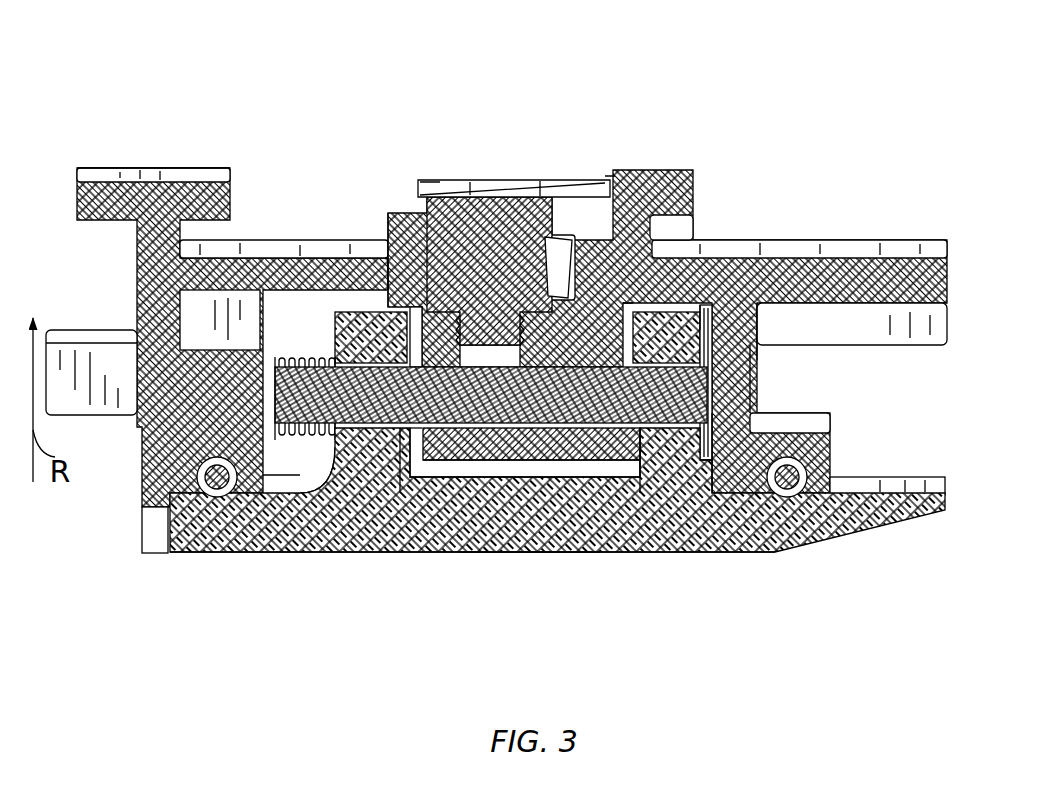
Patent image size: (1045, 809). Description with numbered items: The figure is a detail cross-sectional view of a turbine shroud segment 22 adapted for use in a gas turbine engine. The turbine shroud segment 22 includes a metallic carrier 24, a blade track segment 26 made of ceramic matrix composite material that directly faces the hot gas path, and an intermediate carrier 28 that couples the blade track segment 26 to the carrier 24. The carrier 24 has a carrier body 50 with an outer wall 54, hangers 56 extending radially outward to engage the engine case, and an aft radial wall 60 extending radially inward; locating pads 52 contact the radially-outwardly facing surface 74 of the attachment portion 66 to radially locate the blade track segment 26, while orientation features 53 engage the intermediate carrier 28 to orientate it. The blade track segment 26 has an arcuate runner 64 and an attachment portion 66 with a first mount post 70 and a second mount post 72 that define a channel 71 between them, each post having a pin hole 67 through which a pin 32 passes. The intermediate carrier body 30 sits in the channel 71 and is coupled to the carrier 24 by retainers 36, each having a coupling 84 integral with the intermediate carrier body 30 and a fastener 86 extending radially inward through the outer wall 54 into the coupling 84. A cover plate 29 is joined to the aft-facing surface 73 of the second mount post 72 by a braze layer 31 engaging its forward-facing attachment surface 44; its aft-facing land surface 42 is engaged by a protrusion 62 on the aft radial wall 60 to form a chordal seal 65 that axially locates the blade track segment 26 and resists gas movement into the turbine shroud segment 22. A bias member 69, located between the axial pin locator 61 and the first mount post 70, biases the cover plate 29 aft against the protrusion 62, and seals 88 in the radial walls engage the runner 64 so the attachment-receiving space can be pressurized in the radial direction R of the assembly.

The turbine shroud segment 22 is at (115, 100).
The carrier 24 is at (268, 185).
The blade track segment 26 is at (273, 600).
The intermediate carrier 28 is at (752, 150).
The cover plate 29 is at (755, 367).
The intermediate carrier body 30 is at (587, 302).
The braze layer 31 is at (707, 343).
The pin 32 is at (700, 333).
The retainer 36 is at (570, 103).
The aft-facing land surface 42 is at (716, 333).
The forward-facing attachment surface 44 is at (716, 318).
The carrier body 50 is at (300, 195).
The locating pad 52 is at (345, 300).
The orientation feature 53 is at (443, 272).
The outer wall 54 is at (345, 248).
The hanger 56 is at (200, 178).
The aft radial wall 60 is at (715, 355).
The axial pin locator 61 is at (200, 340).
The protrusion 62 is at (718, 383).
The runner 64 is at (330, 556).
The chordal seal 65 is at (732, 423).
The attachment portion 66 is at (535, 622).
The first pin hole 67 is at (400, 430).
The bias member 69 is at (302, 443).
The first mount post 70 is at (433, 487).
The channel 71 is at (543, 478).
The second mount post 72 is at (598, 463).
The aft-facing surface 73 is at (710, 463).
The radially-outwardly facing surface 74 is at (383, 310).
The coupling 84 is at (528, 272).
The fastener 86 is at (528, 180).
The seal 88 is at (190, 465).